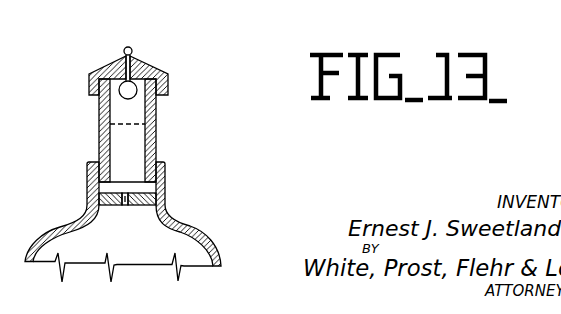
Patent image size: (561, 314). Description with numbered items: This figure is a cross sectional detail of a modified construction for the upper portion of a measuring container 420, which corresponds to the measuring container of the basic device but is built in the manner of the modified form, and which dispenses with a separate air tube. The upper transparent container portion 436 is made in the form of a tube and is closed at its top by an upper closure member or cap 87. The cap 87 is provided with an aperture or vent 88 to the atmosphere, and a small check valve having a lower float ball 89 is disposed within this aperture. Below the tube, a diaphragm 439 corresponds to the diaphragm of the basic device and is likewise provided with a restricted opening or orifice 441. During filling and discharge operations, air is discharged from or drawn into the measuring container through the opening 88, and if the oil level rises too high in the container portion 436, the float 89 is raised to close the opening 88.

The cap 87 is at (160, 73).
The aperture or vent 88 is at (131, 60).
The float ball 89 is at (122, 93).
The measuring container 420 is at (188, 223).
The upper transparent container portion 436 is at (133, 143).
The diaphragm 439 is at (99, 198).
The restricted opening or orifice 441 is at (126, 206).